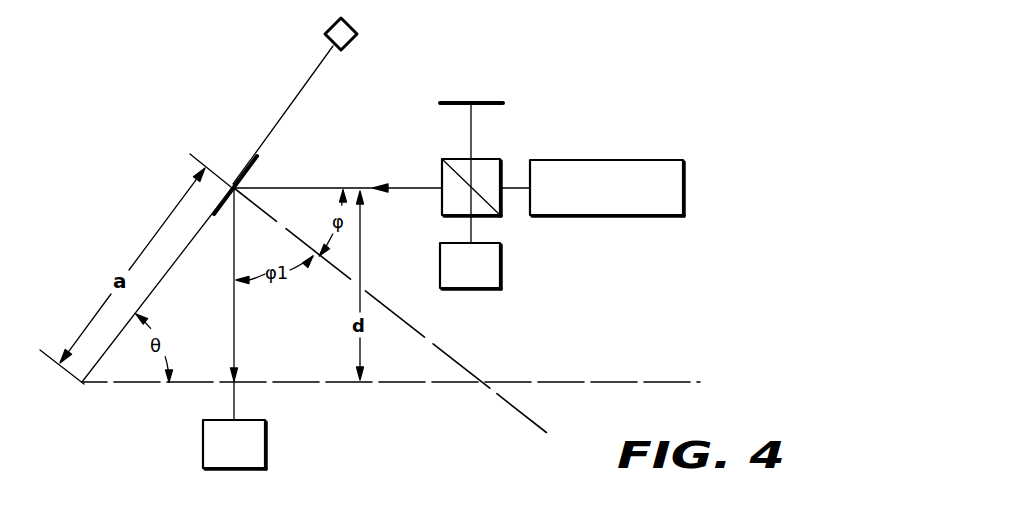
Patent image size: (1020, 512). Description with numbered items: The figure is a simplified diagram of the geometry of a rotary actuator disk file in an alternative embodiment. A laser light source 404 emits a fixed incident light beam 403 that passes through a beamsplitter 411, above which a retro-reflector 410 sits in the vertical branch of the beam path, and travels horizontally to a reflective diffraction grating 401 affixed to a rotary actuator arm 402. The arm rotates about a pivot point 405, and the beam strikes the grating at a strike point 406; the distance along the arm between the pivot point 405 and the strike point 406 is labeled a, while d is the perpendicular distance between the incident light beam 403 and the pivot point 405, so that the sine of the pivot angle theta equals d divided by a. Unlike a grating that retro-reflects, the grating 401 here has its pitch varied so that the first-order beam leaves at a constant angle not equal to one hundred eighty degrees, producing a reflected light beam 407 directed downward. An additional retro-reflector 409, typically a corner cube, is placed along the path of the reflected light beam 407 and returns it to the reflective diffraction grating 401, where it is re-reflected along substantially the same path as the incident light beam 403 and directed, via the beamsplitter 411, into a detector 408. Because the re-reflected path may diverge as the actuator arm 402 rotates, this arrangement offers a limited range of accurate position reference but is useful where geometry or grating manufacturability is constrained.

The reflective diffraction grating 401 is at (247, 172).
The rotary actuator arm 402 is at (304, 82).
The incident light beam 403 is at (377, 160).
The laser light source 404 is at (657, 160).
The pivot point 405 is at (83, 384).
The strike point 406 is at (224, 178).
The reflected light beam 407 is at (237, 372).
The detector 408 is at (500, 286).
The retro-reflector 409 is at (266, 427).
The retro-reflector 410 is at (504, 78).
The beamsplitter 411 is at (496, 158).